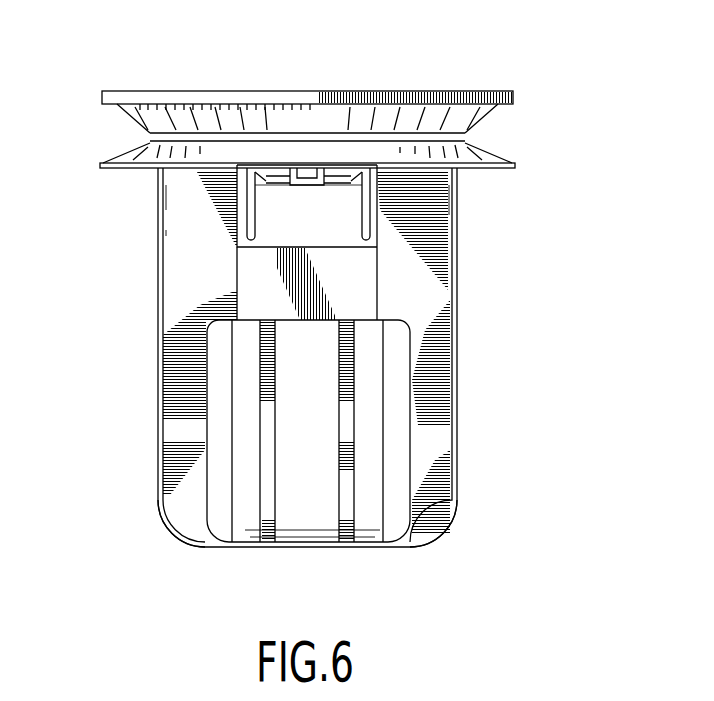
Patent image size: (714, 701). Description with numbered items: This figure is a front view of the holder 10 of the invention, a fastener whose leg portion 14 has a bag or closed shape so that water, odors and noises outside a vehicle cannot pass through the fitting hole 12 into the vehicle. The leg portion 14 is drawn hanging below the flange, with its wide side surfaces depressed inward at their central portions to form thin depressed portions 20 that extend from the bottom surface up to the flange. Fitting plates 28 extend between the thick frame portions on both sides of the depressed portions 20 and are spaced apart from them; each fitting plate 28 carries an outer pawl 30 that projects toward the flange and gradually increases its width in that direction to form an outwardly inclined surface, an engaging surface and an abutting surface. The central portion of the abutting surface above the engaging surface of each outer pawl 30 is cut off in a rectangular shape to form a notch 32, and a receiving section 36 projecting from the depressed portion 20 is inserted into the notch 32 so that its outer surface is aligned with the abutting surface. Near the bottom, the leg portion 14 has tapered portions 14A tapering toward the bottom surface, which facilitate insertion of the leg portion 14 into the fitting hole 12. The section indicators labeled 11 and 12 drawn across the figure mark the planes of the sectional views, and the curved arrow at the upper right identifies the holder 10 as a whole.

The holder 10 is at (523, 64).
The section line 11 is at (528, 405).
The fitting hole 12 is at (556, 181).
The leg portion 14 is at (458, 342).
The tapered portions 14A is at (168, 537).
The depressed portions 20 is at (313, 522).
The fitting plates 28 is at (360, 277).
The outer pawls 30 is at (338, 202).
The notches 32 is at (312, 187).
The receiving sections 36 is at (306, 170).